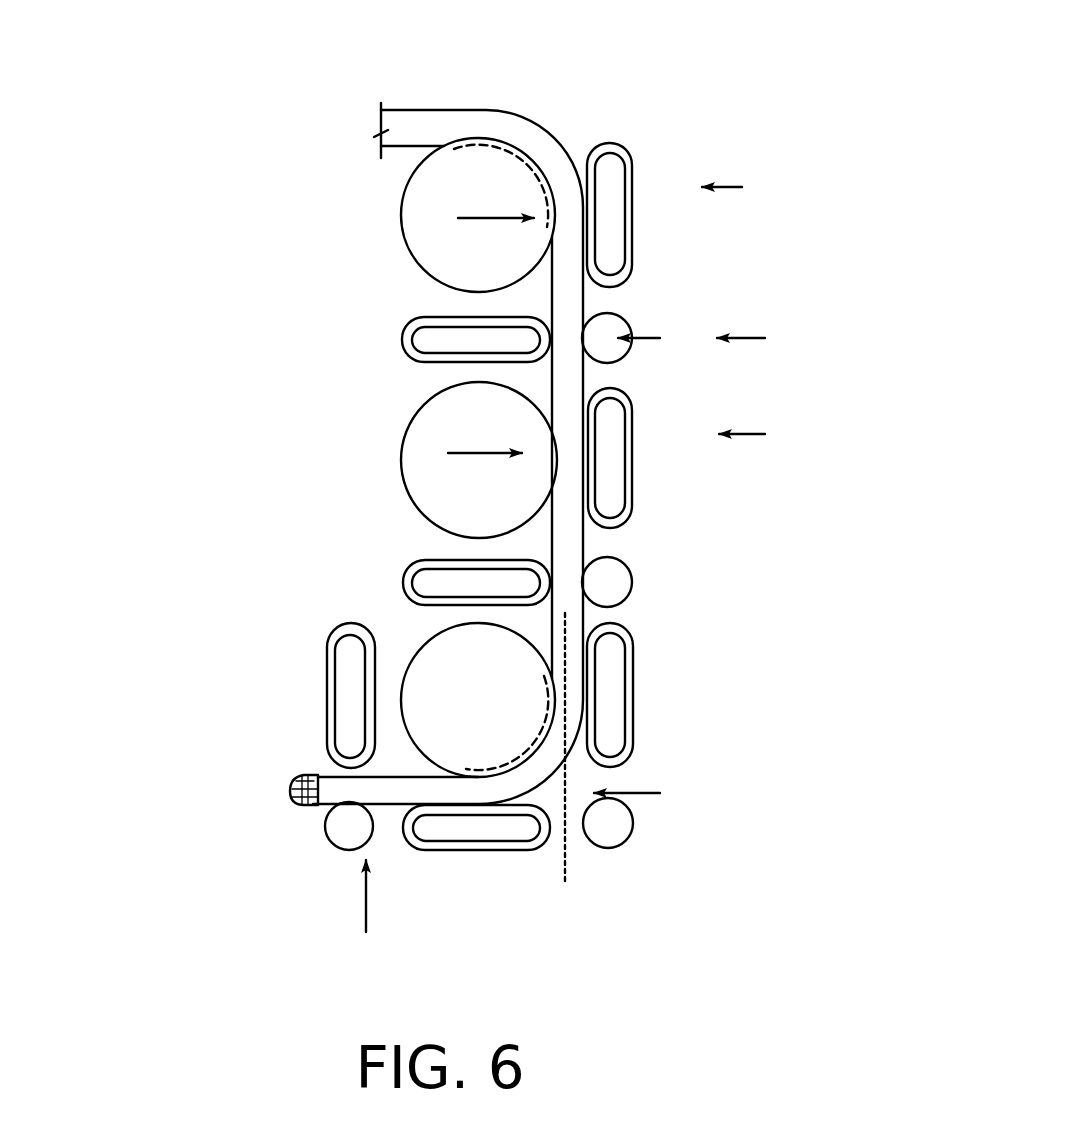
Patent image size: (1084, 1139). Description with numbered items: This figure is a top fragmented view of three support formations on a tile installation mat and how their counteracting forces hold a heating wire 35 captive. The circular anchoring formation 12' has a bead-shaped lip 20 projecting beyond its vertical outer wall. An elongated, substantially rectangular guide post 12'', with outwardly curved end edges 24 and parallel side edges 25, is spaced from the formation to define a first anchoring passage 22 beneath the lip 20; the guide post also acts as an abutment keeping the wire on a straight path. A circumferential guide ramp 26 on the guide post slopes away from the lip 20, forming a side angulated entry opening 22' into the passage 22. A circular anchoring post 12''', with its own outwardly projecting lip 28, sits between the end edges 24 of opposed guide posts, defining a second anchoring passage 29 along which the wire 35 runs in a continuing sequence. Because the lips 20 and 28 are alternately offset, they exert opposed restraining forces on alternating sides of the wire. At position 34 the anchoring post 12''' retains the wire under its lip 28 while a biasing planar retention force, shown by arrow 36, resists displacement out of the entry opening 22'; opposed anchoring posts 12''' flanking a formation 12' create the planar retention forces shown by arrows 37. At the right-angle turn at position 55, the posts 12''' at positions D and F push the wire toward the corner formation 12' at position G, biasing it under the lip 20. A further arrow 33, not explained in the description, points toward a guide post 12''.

The lip 20 is at (493, 140).
The heating wire 35 is at (537, 143).
The circular anchoring formation 12' is at (423, 457).
The guide post 12'' is at (521, 469).
The circular anchoring post 12''' is at (487, 589).
The first anchoring passage 22 is at (501, 303).
The side angulated entry opening 22' is at (490, 316).
The end edges 24 is at (608, 143).
The side edges 25 is at (632, 247).
The guide ramp 26 is at (623, 202).
The lip 28 is at (573, 330).
The second anchoring passage 29 is at (565, 583).
The direction arrow 33 is at (750, 311).
The position 34 is at (761, 336).
The arrow 36 is at (478, 218).
The arrows 37 is at (648, 340).
The position 55 is at (633, 795).
The position D is at (645, 606).
The position F is at (387, 848).
The position G is at (468, 734).